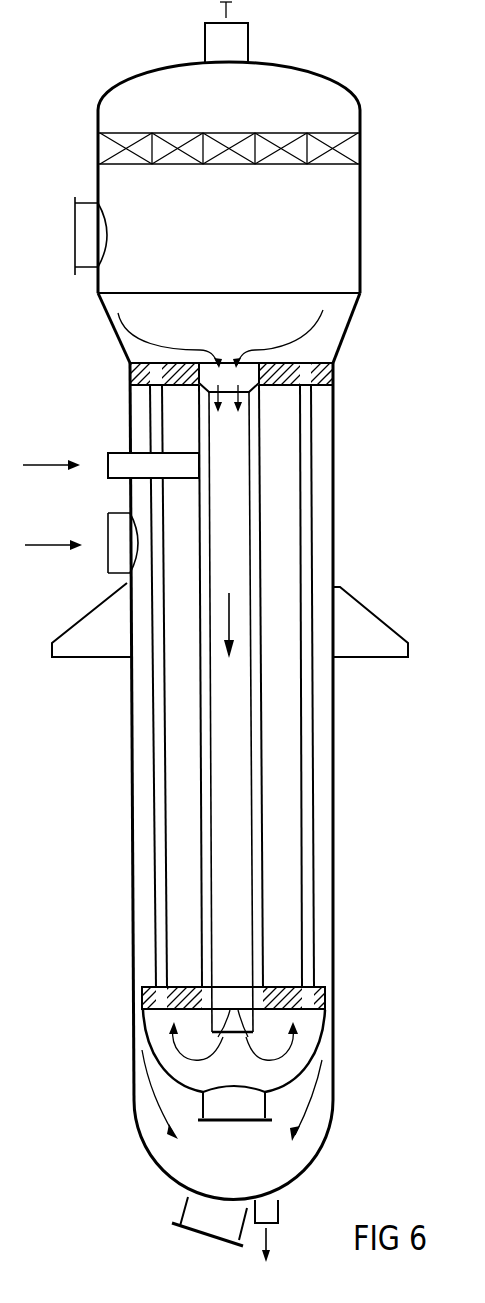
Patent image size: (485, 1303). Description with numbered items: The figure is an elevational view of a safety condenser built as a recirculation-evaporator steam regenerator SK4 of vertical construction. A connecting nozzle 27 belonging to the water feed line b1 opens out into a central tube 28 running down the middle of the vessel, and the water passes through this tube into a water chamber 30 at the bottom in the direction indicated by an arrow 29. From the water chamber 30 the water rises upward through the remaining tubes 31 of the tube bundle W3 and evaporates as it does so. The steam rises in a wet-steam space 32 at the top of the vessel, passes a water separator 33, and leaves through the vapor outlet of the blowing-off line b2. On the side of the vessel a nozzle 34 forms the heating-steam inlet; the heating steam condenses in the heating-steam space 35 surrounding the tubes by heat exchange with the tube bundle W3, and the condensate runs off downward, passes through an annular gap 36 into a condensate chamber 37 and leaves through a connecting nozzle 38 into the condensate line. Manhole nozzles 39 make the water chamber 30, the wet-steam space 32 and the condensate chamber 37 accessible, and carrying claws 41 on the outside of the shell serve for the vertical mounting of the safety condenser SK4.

The connecting nozzle 27 is at (117, 480).
The central tube 28 is at (247, 458).
The arrow 29 is at (228, 615).
The water chamber 30 is at (163, 1042).
The remaining tubes 31 is at (153, 880).
The wet-steam space 32 is at (348, 233).
The water separator 33 is at (343, 150).
The nozzle for heating-steam inlet 34 is at (108, 552).
The heating-steam space 35 is at (283, 738).
The annular gap 36 is at (143, 993).
The condensate chamber 37 is at (313, 1123).
The connecting nozzle 38 is at (278, 1210).
The manhole nozzles 39 is at (80, 213).
The carrying claws 41 is at (80, 620).
The water feed line b1 is at (110, 450).
The blowing-off line b2 is at (243, 38).
The tube bundle W3 is at (107, 730).
The recirculation-evaporator steam regenerator SK4 is at (100, 823).